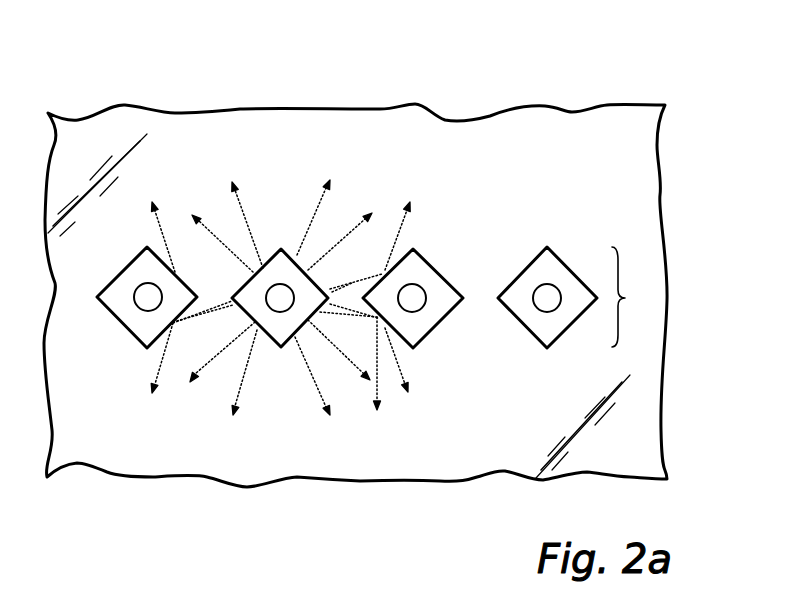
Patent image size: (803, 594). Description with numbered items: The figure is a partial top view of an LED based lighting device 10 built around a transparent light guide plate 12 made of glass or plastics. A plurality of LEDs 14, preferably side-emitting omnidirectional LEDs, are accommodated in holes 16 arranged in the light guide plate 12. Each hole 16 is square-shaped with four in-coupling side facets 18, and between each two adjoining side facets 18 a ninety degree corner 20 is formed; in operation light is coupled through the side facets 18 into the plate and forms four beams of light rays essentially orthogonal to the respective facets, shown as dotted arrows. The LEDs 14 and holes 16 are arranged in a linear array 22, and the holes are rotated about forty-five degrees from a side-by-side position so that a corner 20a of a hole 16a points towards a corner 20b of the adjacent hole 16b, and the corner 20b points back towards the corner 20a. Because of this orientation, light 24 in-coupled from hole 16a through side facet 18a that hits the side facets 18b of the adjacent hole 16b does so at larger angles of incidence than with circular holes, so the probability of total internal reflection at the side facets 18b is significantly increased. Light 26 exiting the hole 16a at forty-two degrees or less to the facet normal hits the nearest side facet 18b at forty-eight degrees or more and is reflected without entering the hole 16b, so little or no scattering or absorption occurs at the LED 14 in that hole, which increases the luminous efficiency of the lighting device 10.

The lighting device 10 is at (393, 252).
The light guide plate 12 is at (668, 302).
The light emitting diodes 14 is at (140, 297).
The holes 16 is at (121, 321).
The hole 16a is at (260, 270).
The adjacent hole 16b is at (422, 256).
The in-coupling side facets 18 is at (243, 284).
The side facet 18a is at (305, 325).
The side facets 18b is at (400, 330).
The corner 20 is at (281, 249).
The corner 20a is at (330, 297).
The corner 20b is at (363, 297).
The linear array 22 is at (637, 297).
The light 24 is at (410, 380).
The light 26 is at (377, 387).